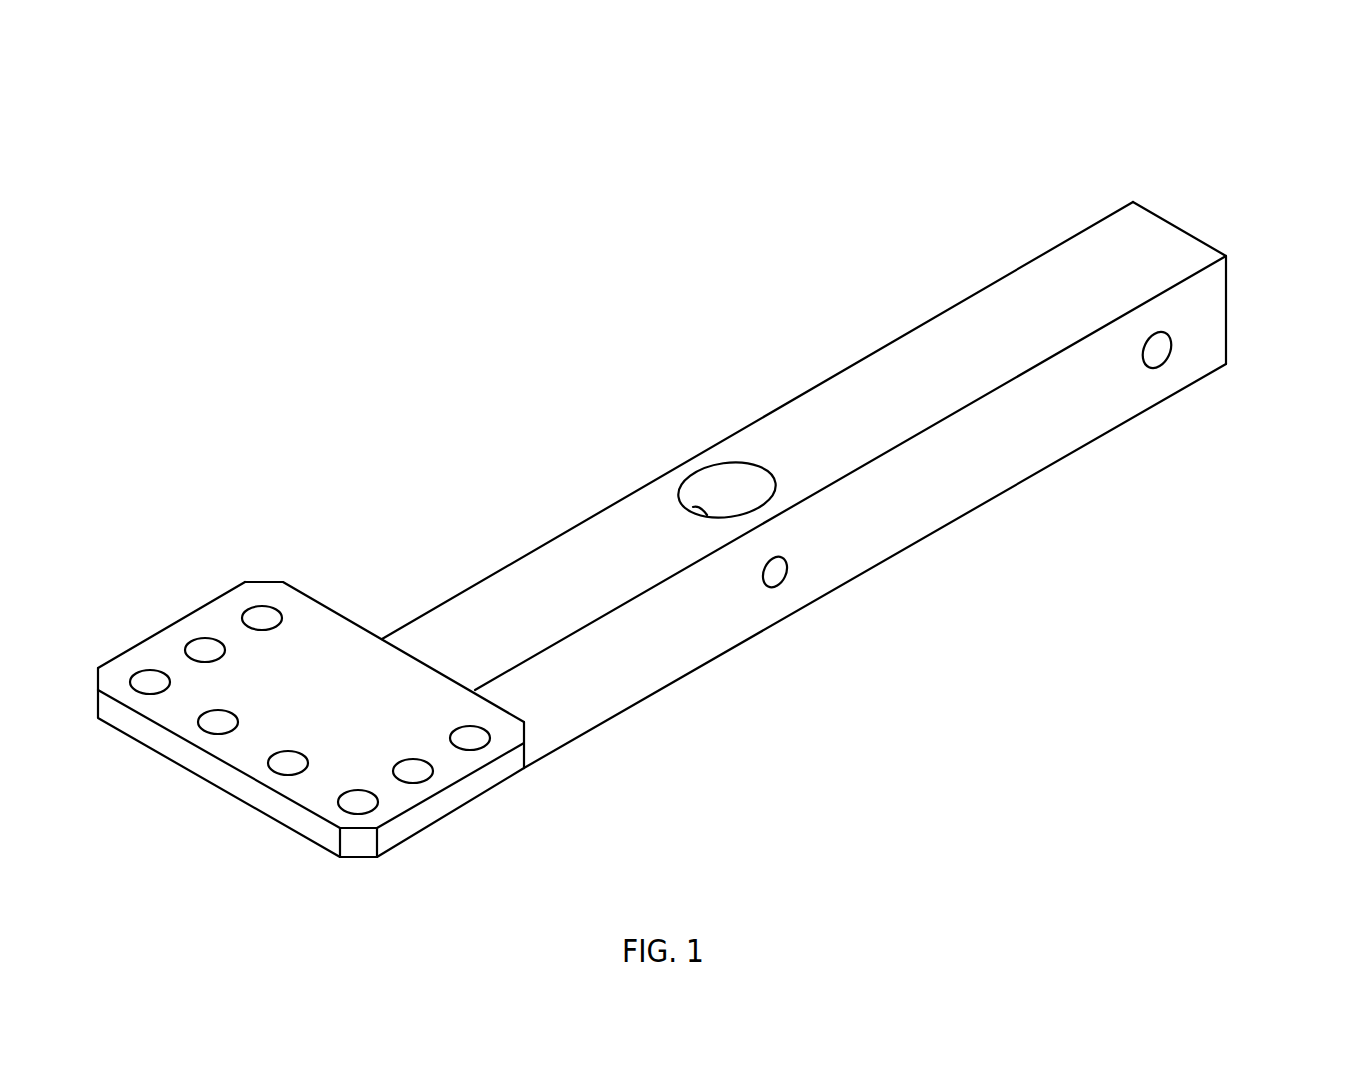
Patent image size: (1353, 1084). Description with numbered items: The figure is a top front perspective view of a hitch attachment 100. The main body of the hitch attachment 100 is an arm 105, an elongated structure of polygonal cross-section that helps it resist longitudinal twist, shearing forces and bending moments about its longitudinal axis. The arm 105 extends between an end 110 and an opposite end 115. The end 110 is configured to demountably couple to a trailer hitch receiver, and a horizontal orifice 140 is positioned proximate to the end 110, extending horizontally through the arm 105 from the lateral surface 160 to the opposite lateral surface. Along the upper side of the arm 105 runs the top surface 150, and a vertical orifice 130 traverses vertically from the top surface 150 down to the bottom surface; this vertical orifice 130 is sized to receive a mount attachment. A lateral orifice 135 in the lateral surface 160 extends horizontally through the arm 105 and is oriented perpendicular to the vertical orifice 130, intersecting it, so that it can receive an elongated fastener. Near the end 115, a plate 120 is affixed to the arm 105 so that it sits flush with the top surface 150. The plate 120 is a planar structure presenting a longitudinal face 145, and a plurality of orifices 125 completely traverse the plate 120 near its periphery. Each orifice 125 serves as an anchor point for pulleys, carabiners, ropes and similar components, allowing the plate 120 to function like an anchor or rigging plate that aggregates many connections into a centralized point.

The hitch attachment 100 is at (1024, 162).
The arm 105 is at (750, 427).
The end 110 is at (1173, 223).
The end 115 is at (438, 822).
The plate 120 is at (210, 602).
The orifice 125 is at (150, 680).
The vertical orifice 130 is at (697, 487).
The lateral orifice 135 is at (777, 577).
The horizontal orifice 140 is at (1155, 352).
The longitudinal face 145 is at (358, 665).
The top surface 150 is at (942, 330).
The lateral surface 160 is at (1077, 412).